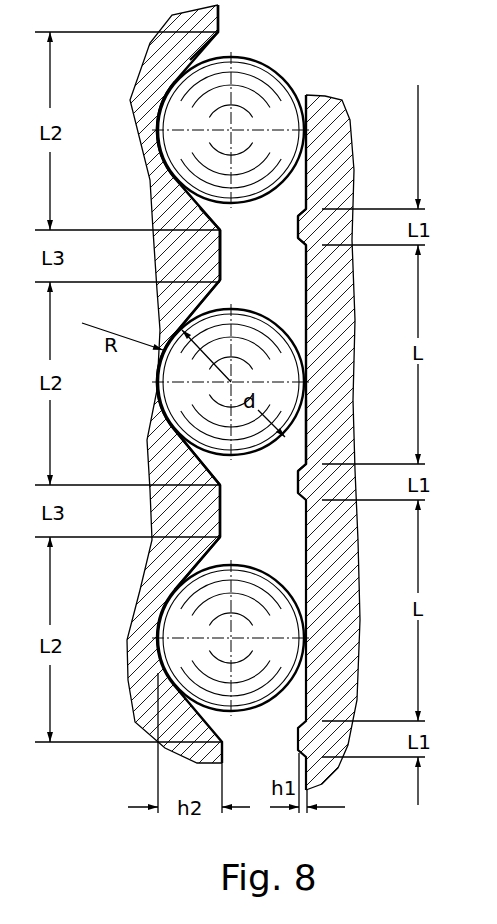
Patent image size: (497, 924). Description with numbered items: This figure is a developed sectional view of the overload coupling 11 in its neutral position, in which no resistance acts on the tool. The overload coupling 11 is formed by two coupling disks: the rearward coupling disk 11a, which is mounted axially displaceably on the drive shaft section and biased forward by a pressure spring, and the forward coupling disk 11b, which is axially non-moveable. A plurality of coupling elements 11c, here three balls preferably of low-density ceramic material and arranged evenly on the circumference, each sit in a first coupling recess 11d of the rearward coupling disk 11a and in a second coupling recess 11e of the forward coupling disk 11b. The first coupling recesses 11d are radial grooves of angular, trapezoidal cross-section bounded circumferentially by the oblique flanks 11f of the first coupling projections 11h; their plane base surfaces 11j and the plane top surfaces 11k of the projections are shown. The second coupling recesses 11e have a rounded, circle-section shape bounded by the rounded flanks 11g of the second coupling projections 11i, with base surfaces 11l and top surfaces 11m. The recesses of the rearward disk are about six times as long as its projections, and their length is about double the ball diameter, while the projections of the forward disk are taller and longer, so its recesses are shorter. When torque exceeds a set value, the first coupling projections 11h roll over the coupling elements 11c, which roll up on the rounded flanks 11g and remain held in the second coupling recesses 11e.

The overload coupling 11 is at (330, 539).
The rearward coupling disk 11a is at (343, 123).
The forward coupling disk 11b is at (160, 247).
The coupling elements 11c is at (150, 158).
The first coupling recess 11d is at (308, 313).
The second coupling recess 11e is at (190, 458).
The oblique flanks 11f is at (305, 207).
The rounded flanks 11g is at (200, 57).
The first coupling projections 11h is at (297, 227).
The second coupling projections 11i is at (220, 262).
The base surfaces 11j is at (308, 440).
The top surfaces 11k is at (297, 480).
The base surfaces 11l is at (195, 285).
The top surfaces 11m is at (223, 518).